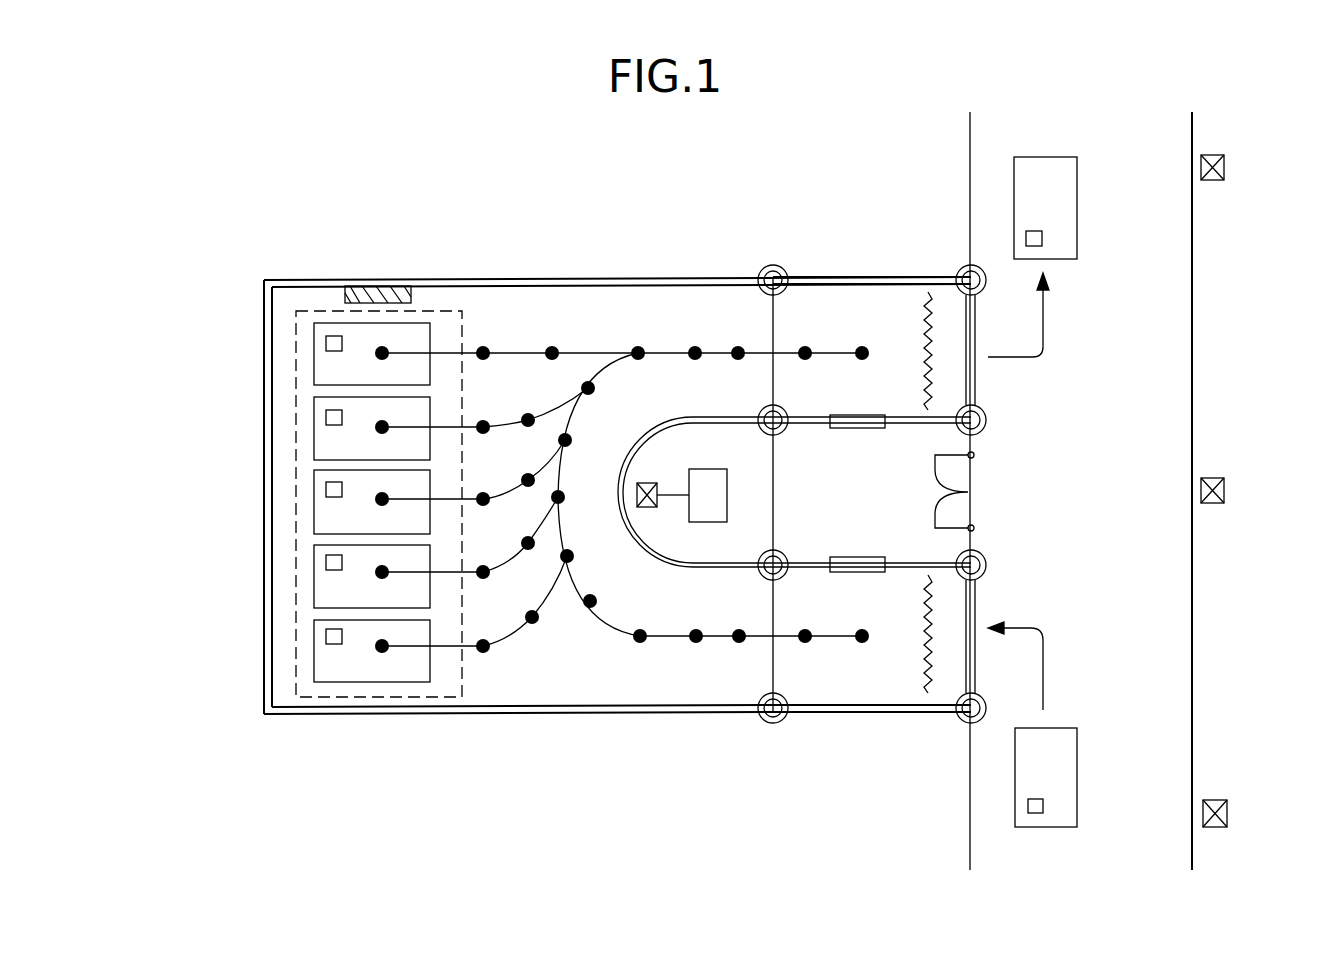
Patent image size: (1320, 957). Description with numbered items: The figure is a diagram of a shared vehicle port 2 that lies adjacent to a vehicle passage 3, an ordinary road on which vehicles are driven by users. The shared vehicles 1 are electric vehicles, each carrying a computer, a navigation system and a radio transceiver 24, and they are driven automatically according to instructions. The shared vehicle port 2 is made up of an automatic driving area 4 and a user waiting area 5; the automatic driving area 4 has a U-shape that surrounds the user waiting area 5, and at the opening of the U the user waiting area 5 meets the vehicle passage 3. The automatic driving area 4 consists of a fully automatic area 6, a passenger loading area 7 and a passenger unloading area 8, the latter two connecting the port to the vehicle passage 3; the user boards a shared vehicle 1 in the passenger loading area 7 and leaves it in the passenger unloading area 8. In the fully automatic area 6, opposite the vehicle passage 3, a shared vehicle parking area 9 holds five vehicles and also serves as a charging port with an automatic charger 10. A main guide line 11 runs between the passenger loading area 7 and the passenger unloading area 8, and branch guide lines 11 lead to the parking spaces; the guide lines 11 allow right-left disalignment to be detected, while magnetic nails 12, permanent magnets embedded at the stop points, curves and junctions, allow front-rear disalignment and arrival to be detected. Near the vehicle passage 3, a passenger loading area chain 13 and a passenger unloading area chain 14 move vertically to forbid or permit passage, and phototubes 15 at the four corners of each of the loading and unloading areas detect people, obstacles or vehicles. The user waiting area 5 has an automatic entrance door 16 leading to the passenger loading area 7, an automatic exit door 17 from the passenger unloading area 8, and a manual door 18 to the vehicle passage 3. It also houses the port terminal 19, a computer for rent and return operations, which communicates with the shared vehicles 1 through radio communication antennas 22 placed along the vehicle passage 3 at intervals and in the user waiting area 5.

The shared vehicle 1 is at (330, 323).
The shared vehicle port 2 is at (527, 262).
The vehicle passage 3 is at (1175, 383).
The automatic driving area 4 is at (264, 508).
The user waiting area 5 is at (930, 548).
The fully automatic area 6 is at (617, 683).
The passenger loading area 7 is at (810, 300).
The passenger unloading area 8 is at (865, 683).
The shared vehicle parking area 9 is at (310, 697).
The automatic charger 10 is at (380, 300).
The guide line 11 is at (503, 641).
The magnetic nail 12 is at (645, 631).
The passenger loading area chain 13 is at (912, 320).
The passenger unloading area chain 14 is at (925, 700).
The phototube 15 is at (760, 268).
The automatic entrance door 16 is at (858, 428).
The automatic exit door 17 is at (845, 557).
The manual door 18 is at (940, 513).
The port terminal 19 is at (727, 505).
The radio communication antenna 22 is at (645, 483).
The radio transceiver 24 is at (330, 343).